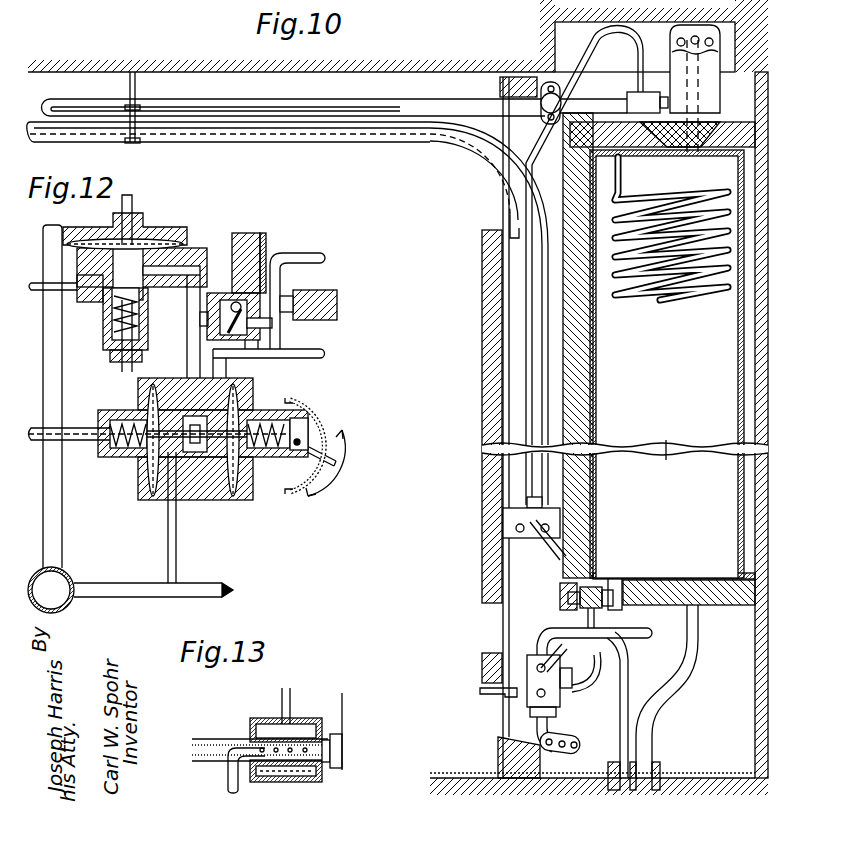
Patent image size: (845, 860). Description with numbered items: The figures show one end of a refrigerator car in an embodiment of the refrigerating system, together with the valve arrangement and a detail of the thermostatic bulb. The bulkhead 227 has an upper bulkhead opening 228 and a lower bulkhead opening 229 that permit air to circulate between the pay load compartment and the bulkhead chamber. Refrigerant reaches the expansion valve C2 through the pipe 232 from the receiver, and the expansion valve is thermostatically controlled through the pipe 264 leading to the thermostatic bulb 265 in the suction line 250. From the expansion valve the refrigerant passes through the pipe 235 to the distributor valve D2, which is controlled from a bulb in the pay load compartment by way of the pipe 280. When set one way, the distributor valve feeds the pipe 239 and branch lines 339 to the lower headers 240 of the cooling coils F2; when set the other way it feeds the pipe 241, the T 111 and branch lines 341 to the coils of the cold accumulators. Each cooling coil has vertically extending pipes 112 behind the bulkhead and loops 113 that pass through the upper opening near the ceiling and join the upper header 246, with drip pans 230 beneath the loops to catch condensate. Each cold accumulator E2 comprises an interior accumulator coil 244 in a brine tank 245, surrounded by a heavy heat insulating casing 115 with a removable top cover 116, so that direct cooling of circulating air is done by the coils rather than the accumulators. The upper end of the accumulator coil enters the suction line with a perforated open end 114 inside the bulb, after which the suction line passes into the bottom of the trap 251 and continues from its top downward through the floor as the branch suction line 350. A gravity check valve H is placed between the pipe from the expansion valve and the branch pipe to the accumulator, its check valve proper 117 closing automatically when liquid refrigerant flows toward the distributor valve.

In FIG. 10, the loops 113 is at (210, 105).
In FIG. 10, the suction line 250 is at (600, 100).
In FIG. 13, the suction line 250 is at (212, 727).
In FIG. 10, the drip pans 230 is at (302, 140).
In FIG. 10, the pay load cooling or expansion coils F2 is at (386, 126).
In FIG. 10, the upper bulkhead opening 228 is at (494, 212).
In FIG. 10, the upper header 246 is at (542, 87).
In FIG. 10, the pipe 264 is at (612, 38).
In FIG. 12, the pipe 264 is at (132, 198).
In FIG. 13, the pipe 264 is at (285, 692).
In FIG. 10, the thermostatic bulb 265 is at (644, 94).
In FIG. 13, the thermostatic bulb 265 is at (304, 718).
In FIG. 10, the trap 251 is at (713, 63).
In FIG. 13, the trap 251 is at (352, 765).
In FIG. 10, the removable top cover 116 is at (703, 125).
In FIG. 10, the heat insulating casing 115 is at (757, 134).
In FIG. 12, the heat insulating casing 115 is at (252, 233).
In FIG. 10, the accumulator coil 244 is at (735, 193).
In FIG. 13, the accumulator coil 244 is at (226, 782).
In FIG. 10, the brine tank 245 is at (746, 243).
In FIG. 12, the brine tank 245 is at (337, 296).
In FIG. 10, the vertically extending pipes 112 is at (547, 415).
In FIG. 12, the vertically extending pipes 112 is at (57, 513).
In FIG. 10, the bulkhead 227 is at (484, 439).
In FIG. 10, the cold accumulator E2 is at (663, 434).
In FIG. 12, the cold accumulator E2 is at (265, 287).
In FIG. 10, the expansion valve C2 is at (508, 520).
In FIG. 12, the expansion valve C2 is at (165, 228).
In FIG. 10, the check valve proper 117 is at (600, 584).
In FIG. 12, the check valve proper 117 is at (276, 272).
In FIG. 10, the pipe 241 is at (534, 632).
In FIG. 12, the pipe 241 is at (258, 359).
In FIG. 10, the lower bulkhead opening 229 is at (482, 643).
In FIG. 10, the pipe 235 is at (570, 642).
In FIG. 12, the pipe 235 is at (194, 335).
In FIG. 10, the T 111 is at (620, 639).
In FIG. 12, the T 111 is at (284, 352).
In FIG. 10, the pipe 232 is at (629, 668).
In FIG. 12, the pipe 232 is at (67, 293).
In FIG. 10, the branch lines 341 is at (649, 634).
In FIG. 12, the branch lines 341 is at (323, 347).
In FIG. 10, the branch suction lines 350 is at (698, 636).
In FIG. 10, the pipe 239 is at (530, 723).
In FIG. 12, the pipe 239 is at (179, 552).
In FIG. 10, the distributor valve D2 is at (560, 697).
In FIG. 12, the distributor valve D2 is at (222, 497).
In FIG. 10, the pipe 280 is at (641, 709).
In FIG. 12, the pipe 280 is at (78, 437).
In FIG. 10, the branch lines 339 is at (560, 748).
In FIG. 12, the branch lines 339 is at (236, 589).
In FIG. 12, the gravity check valve H is at (222, 293).
In FIG. 12, the lower headers 240 is at (70, 603).
In FIG. 13, the perforated open end 114 is at (327, 764).